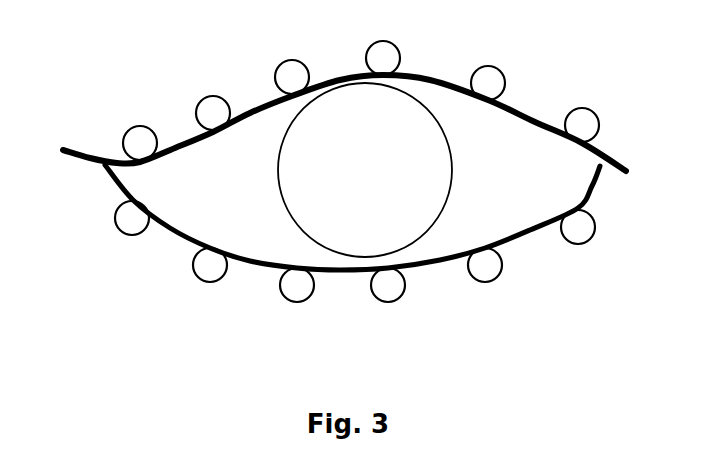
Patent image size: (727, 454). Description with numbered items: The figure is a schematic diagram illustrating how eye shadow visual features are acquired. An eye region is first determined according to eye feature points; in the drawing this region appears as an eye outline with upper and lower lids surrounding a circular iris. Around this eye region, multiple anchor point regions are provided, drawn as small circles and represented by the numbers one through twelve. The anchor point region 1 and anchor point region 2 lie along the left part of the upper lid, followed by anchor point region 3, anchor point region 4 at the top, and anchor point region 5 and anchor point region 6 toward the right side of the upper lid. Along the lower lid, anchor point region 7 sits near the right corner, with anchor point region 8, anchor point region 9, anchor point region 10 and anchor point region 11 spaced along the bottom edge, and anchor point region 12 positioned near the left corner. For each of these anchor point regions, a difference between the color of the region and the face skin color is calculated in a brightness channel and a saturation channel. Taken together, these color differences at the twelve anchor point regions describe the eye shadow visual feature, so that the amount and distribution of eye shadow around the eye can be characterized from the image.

The anchor point region 1 is at (140, 125).
The anchor point region 2 is at (213, 94).
The anchor point region 3 is at (292, 57).
The anchor point region 4 is at (383, 38).
The anchor point region 5 is at (488, 65).
The anchor point region 6 is at (582, 106).
The anchor point region 7 is at (578, 244).
The anchor point region 8 is at (485, 283).
The anchor point region 9 is at (388, 303).
The anchor point region 10 is at (294, 303).
The anchor point region 11 is at (208, 283).
The anchor point region 12 is at (130, 238).